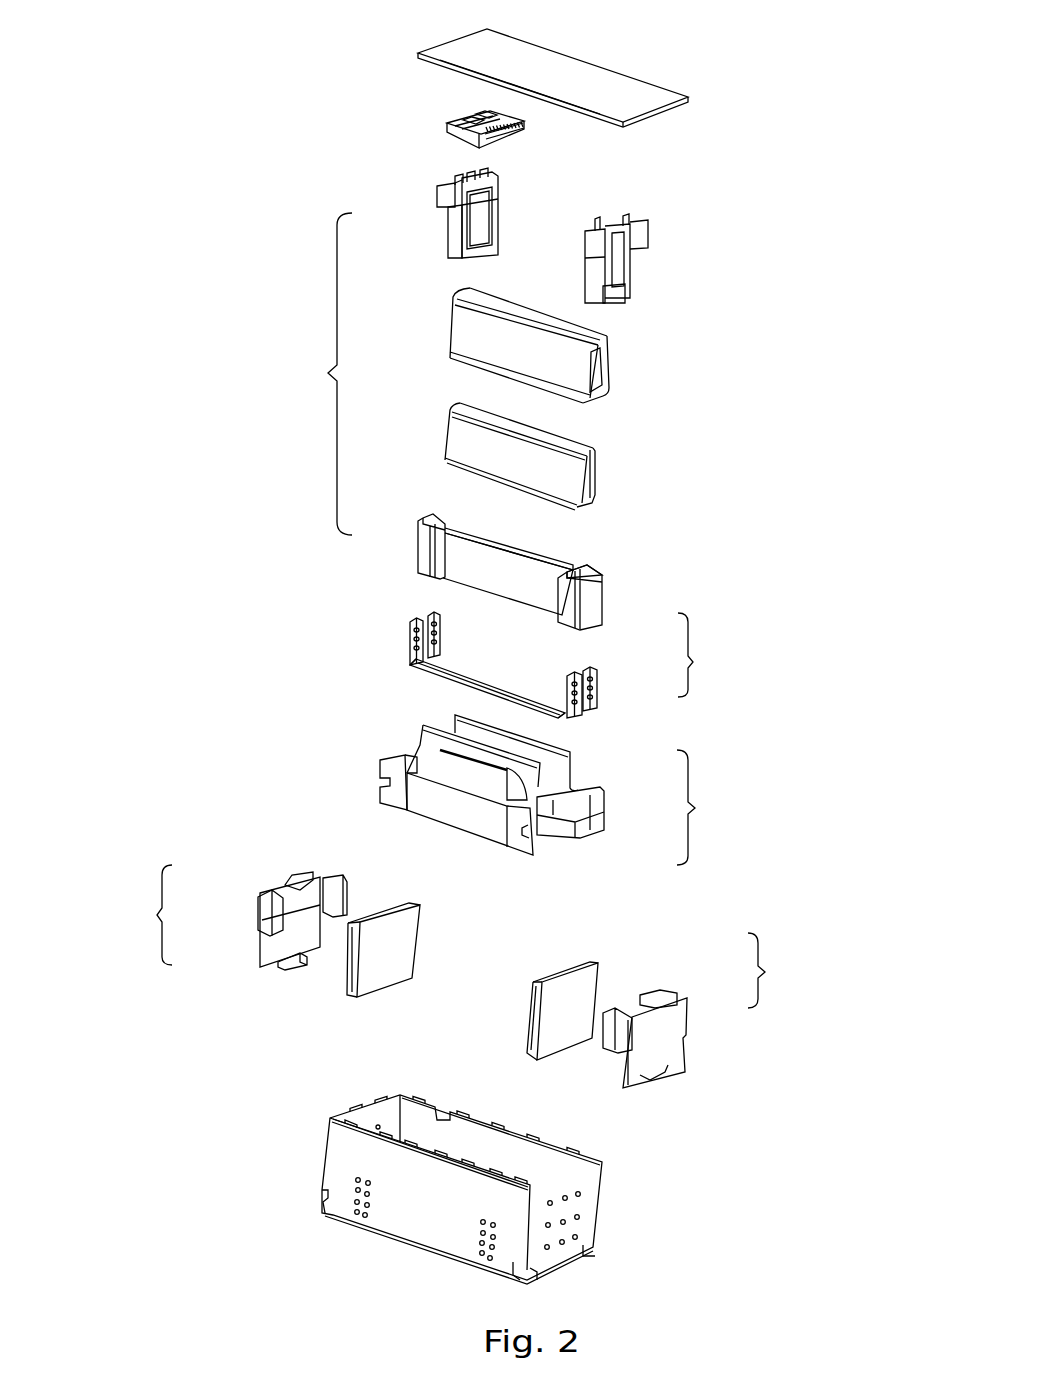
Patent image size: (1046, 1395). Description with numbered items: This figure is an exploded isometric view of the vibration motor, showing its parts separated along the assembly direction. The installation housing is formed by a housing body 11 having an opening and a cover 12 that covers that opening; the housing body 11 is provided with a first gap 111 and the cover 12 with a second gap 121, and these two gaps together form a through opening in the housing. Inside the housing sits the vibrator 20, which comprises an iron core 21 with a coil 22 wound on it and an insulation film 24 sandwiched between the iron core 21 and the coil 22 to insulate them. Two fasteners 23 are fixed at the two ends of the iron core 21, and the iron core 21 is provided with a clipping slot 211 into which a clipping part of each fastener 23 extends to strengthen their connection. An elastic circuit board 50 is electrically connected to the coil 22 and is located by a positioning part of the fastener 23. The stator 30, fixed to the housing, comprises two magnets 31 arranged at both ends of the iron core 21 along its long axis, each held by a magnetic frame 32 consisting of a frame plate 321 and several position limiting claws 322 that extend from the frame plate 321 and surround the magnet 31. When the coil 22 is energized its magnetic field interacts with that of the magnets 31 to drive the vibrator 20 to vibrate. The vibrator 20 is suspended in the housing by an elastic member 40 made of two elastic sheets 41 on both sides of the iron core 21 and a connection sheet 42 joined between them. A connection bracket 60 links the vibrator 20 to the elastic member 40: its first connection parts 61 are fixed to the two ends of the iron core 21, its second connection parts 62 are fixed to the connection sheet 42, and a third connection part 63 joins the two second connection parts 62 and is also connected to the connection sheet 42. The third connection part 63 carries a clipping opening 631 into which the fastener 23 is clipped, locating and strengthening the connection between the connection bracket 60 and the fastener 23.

The housing body 11 is at (433, 1183).
The first gap 111 is at (370, 1132).
The cover 12 is at (463, 58).
The second gap 121 is at (457, 71).
The vibrator 20 is at (501, 399).
The iron core 21 is at (526, 572).
The clipping slot 211 is at (580, 568).
The coil 22 is at (460, 345).
The fastener 23 is at (453, 230).
The insulation film 24 is at (463, 435).
The stator 30 is at (461, 973).
The magnet 31 is at (390, 950).
The magnetic frame 32 is at (433, 973).
The frame plate 321 is at (303, 940).
The position limiting claws 322 is at (273, 913).
The elastic member 40 is at (556, 796).
The elastic sheets 41 is at (573, 767).
The connection sheet 42 is at (592, 807).
The elastic circuit board 50 is at (447, 133).
The connection bracket 60 is at (570, 663).
The first connection part 61 is at (595, 682).
The second connection part 62 is at (592, 708).
The third connection part 63 is at (543, 663).
The clipping opening 631 is at (435, 657).